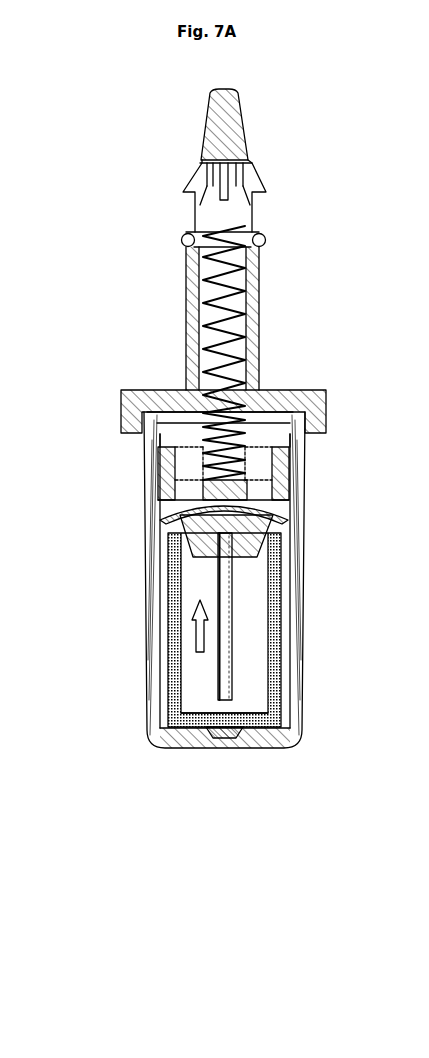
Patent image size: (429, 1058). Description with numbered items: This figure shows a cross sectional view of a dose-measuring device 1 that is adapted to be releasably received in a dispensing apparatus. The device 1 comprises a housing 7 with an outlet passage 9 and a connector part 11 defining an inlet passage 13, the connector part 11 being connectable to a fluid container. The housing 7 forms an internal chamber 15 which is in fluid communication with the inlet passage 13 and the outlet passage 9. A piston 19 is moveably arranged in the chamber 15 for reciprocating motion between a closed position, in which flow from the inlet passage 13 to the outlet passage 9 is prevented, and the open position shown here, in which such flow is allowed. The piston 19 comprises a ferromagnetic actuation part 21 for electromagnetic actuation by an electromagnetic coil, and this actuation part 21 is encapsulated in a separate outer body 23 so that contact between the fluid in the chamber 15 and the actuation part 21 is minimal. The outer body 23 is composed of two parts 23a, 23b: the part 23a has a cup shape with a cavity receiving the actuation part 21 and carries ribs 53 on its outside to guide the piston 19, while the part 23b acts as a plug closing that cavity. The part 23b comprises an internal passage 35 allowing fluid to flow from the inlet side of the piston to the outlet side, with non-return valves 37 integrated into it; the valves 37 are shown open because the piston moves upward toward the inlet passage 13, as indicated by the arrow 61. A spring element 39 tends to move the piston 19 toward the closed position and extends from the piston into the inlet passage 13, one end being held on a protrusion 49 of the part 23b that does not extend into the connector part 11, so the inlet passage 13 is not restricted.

The dose-measuring device 1 is at (302, 764).
The housing 7 is at (309, 422).
The outlet passage 9 is at (223, 745).
The connector part 11 is at (252, 293).
The inlet passage 13 is at (201, 331).
The internal chamber 15 is at (278, 721).
The piston 19 is at (171, 693).
The ferromagnetic actuation part 21 is at (255, 612).
The outer body 23 is at (278, 567).
The cup-shaped part of outer body 23a is at (187, 715).
The plug part of outer body 23b is at (170, 453).
The internal passage 35 is at (188, 472).
The non-return valves 37 is at (182, 510).
The spring element 39 is at (243, 314).
The protrusion 49 is at (197, 458).
The ribs 53 is at (168, 647).
The arrow 61 is at (206, 612).